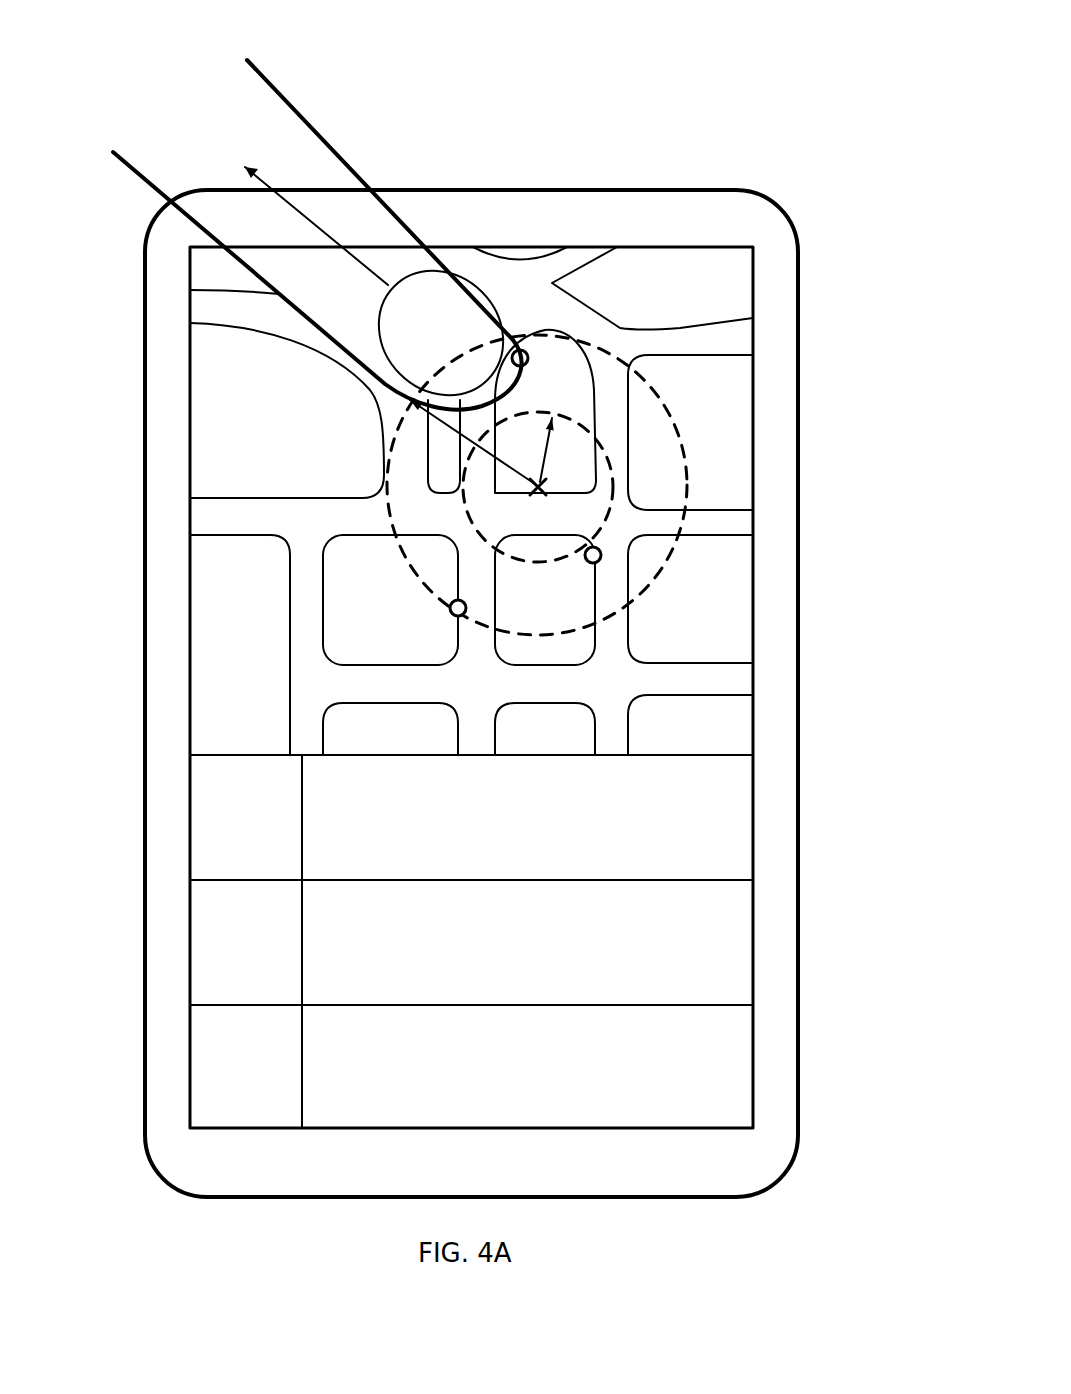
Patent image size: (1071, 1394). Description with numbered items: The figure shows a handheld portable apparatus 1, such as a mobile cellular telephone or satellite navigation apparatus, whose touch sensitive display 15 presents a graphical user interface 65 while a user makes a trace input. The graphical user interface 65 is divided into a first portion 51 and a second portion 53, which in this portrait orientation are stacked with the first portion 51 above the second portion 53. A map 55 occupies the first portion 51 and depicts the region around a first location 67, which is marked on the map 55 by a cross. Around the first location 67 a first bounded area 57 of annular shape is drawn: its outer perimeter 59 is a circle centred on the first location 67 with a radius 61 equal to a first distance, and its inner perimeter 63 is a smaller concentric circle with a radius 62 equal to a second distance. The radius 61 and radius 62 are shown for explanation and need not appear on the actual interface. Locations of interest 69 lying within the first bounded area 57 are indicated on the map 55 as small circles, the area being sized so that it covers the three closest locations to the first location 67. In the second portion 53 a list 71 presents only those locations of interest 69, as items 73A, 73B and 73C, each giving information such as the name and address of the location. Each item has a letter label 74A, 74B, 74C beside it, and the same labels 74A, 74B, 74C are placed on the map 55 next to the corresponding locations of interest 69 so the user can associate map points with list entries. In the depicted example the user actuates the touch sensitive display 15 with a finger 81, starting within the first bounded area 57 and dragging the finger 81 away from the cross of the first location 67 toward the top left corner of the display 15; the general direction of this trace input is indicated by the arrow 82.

The apparatus 1 is at (732, 1204).
The display 15 is at (757, 568).
The first portion 51 is at (737, 380).
The second portion 53 is at (222, 920).
The map 55 is at (737, 660).
The first bounded area 57 is at (637, 392).
The outer perimeter 59 is at (683, 457).
The radius 61 is at (427, 438).
The radius 62 is at (582, 453).
The inner perimeter 63 is at (460, 513).
The graphical user interface 65 is at (390, 521).
The first location 67 is at (615, 487).
The locations of interest 69 is at (528, 357).
The list 71 is at (731, 987).
The item 73A is at (727, 809).
The item 73B is at (731, 928).
The item 73C is at (731, 1083).
The label 74A is at (222, 810).
The label 74B is at (222, 968).
The label 74C is at (222, 1068).
The finger 81 is at (327, 134).
The arrow 82 is at (313, 222).